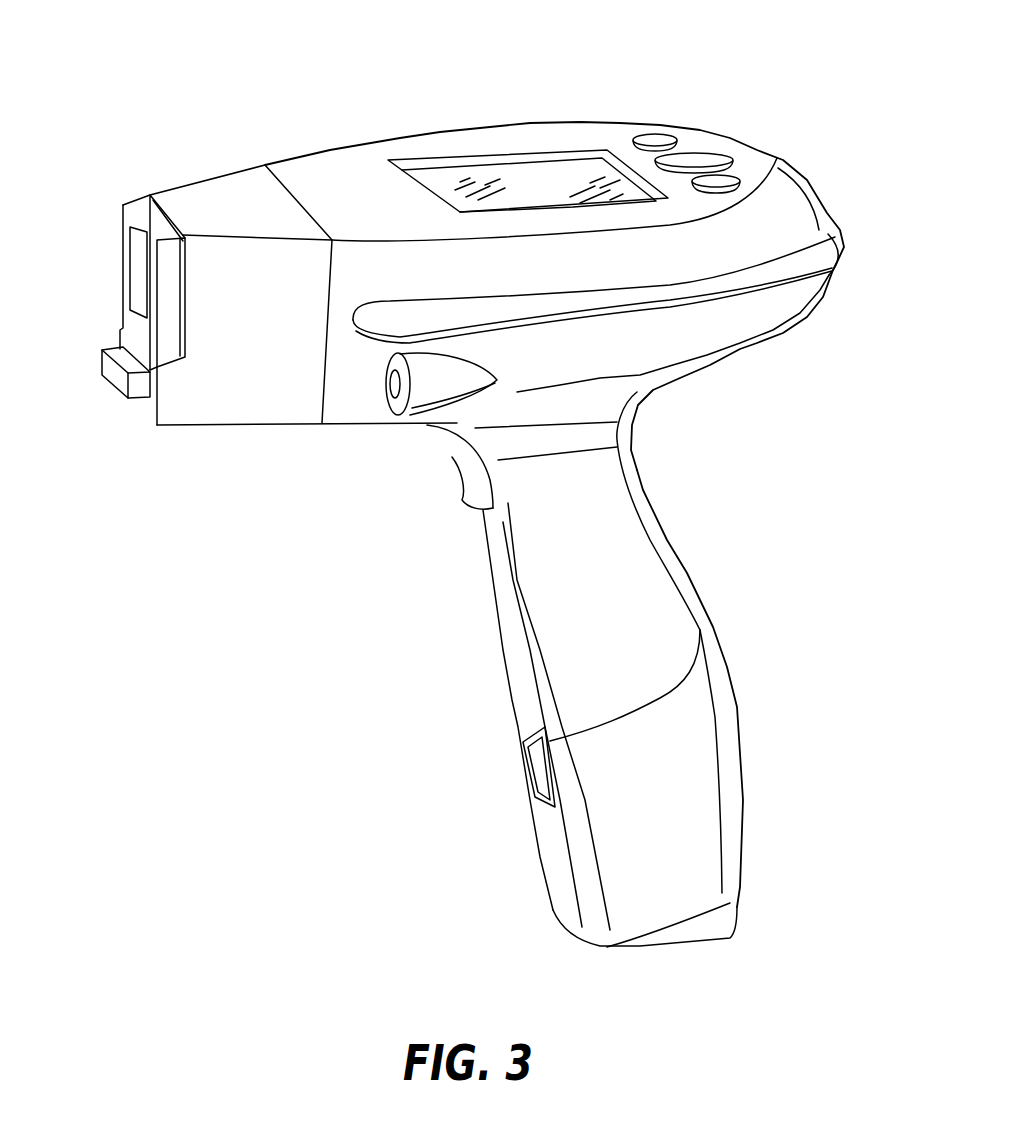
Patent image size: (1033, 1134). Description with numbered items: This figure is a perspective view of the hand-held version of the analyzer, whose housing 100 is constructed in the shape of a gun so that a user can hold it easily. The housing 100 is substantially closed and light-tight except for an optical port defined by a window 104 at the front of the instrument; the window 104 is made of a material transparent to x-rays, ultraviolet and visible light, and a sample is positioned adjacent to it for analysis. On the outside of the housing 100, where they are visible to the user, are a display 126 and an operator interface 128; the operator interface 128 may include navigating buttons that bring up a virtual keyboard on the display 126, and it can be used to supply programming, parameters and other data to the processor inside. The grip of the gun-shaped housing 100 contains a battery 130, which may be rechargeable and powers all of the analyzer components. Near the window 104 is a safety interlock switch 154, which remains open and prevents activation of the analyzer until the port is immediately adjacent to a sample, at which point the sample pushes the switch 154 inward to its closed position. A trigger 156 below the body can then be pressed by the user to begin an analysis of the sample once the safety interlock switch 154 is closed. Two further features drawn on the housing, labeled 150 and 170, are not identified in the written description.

The housing 100 is at (490, 633).
The window 104 is at (140, 256).
The display 126 is at (501, 172).
The operator interface 128 is at (720, 177).
The battery 130 is at (557, 867).
The housing 150 is at (222, 197).
The safety interlock switch 154 is at (117, 377).
The trigger 156 is at (467, 468).
The indicator light 170 is at (390, 388).